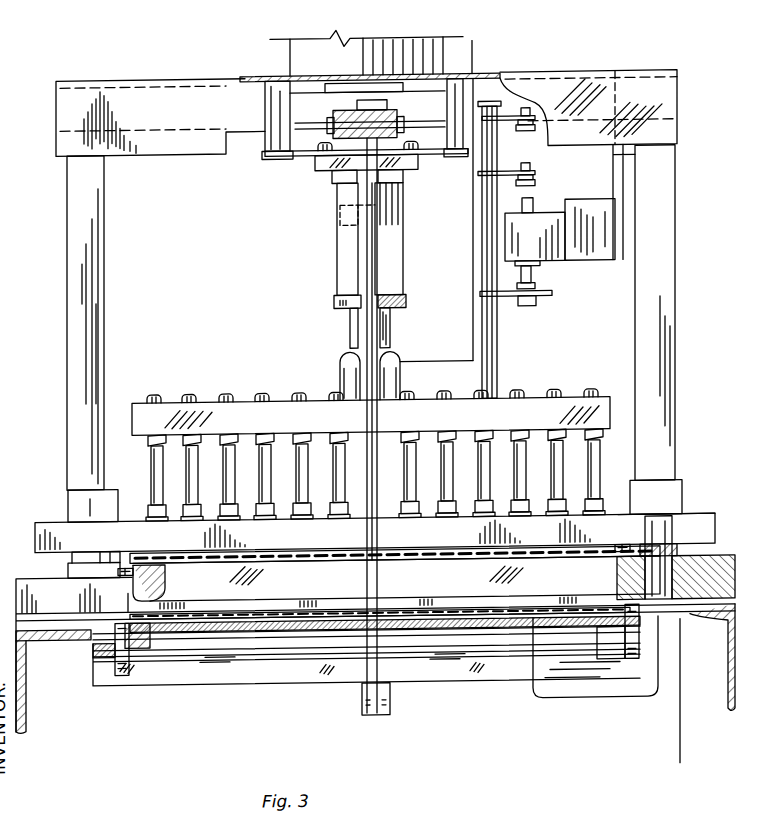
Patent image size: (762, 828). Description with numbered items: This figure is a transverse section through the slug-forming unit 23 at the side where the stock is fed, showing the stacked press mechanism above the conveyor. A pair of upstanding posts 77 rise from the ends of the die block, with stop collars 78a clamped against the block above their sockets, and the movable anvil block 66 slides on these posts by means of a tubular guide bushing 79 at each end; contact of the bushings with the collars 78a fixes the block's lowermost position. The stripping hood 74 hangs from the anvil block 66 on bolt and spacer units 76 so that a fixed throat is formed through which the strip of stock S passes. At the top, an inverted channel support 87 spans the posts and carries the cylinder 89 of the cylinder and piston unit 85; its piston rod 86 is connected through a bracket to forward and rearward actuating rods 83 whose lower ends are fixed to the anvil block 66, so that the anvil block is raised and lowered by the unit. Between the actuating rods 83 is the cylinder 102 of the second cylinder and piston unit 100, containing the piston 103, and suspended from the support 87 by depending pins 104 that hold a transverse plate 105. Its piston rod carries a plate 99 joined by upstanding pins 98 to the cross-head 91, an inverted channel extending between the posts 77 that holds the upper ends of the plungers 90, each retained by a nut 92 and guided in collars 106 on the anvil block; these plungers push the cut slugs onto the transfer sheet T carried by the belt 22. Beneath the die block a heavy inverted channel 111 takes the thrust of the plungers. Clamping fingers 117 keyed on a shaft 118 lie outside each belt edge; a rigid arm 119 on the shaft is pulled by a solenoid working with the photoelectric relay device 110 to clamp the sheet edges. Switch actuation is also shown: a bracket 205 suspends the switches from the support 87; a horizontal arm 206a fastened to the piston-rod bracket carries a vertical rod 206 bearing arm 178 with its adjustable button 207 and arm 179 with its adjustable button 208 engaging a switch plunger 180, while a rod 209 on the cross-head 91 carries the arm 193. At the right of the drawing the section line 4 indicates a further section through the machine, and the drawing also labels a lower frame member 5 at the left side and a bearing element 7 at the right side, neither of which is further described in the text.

The cylinder and piston unit 85 is at (318, 60).
The cylinder 89 is at (446, 56).
The section line 4- 4 is at (478, 63).
The inverted channel support 87 is at (70, 145).
The upstanding posts 77 is at (68, 264).
The tubular guide bushing 79 is at (77, 498).
The bracket 205 is at (648, 159).
The depending pins 104 is at (268, 146).
The transverse plate 105 is at (302, 158).
The horizontal arm 206a is at (398, 108).
The piston rod 86 is at (355, 104).
The cylinder and piston unit 100 is at (350, 265).
The piston 103 is at (340, 215).
The cylinder 102 is at (399, 222).
The actuating rods 83 is at (350, 328).
The rigid arm 119 is at (376, 716).
The plate 99 is at (388, 362).
The upstanding pins 98 is at (403, 378).
The vertical rod 206 is at (487, 232).
The arm 193 is at (510, 124).
The arm 178 is at (535, 175).
The adjustable button 207 is at (533, 185).
The switch plunger 180 is at (534, 278).
The adjustable button 208 is at (537, 290).
The arm 179 is at (546, 299).
The rod 209 is at (500, 375).
The cross-head 91 is at (166, 393).
The nut 92 is at (204, 395).
The guide collars 106 is at (150, 512).
The plunger 90 is at (596, 470).
The slug-forming unit 23 is at (662, 532).
The anvil block 66 is at (716, 512).
The stop collars 78a is at (68, 566).
The bearing 7 is at (676, 586).
The bolt and spacer units 76 is at (125, 558).
The frame 5 is at (22, 590).
The strip of stock S is at (396, 582).
The transfer sheet T is at (395, 573).
The stripping hood 74 is at (279, 580).
The belt 22 is at (338, 622).
The shaft 118 is at (185, 655).
The inverted channel 111 is at (297, 633).
The clamping fingers 117 is at (113, 638).
The photoelectric relay device 110 is at (609, 680).